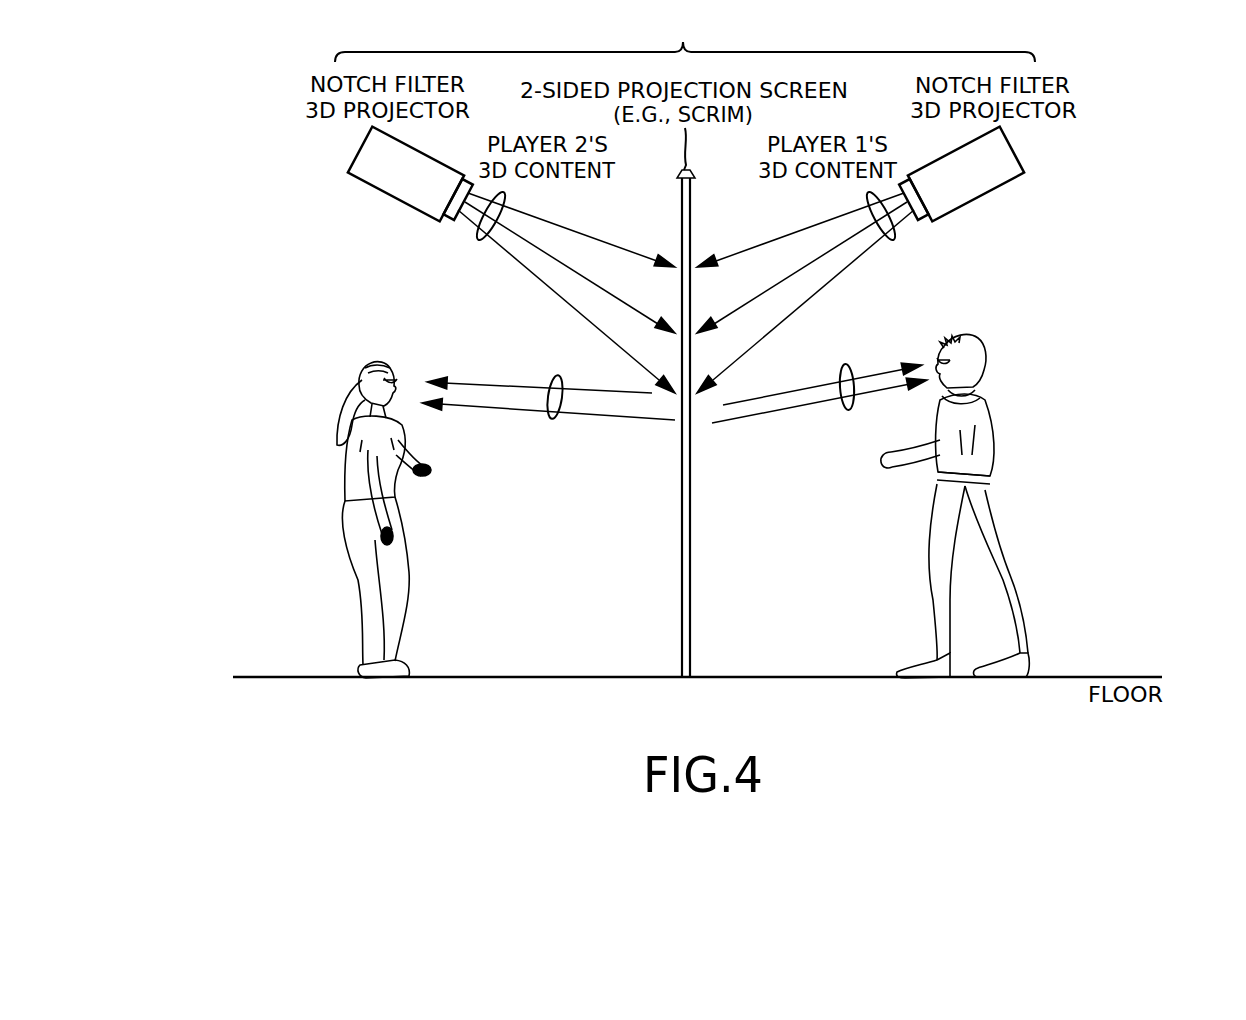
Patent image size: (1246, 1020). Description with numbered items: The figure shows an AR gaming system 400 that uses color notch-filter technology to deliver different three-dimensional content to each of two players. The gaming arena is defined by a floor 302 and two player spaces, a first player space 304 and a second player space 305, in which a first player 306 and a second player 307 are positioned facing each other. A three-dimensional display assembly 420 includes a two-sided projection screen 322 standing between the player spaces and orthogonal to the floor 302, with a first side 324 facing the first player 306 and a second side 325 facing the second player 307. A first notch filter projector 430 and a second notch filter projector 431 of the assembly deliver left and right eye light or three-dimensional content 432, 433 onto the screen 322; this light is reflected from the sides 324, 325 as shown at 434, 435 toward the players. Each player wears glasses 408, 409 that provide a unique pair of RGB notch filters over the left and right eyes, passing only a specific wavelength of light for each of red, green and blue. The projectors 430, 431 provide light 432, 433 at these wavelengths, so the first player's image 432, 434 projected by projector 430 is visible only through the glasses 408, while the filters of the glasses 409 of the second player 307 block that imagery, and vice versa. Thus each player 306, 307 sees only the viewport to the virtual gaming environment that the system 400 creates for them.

The AR gaming system 400 is at (227, 140).
The 3D display assembly 420 is at (685, 38).
The second notch filter 3D projector 431 is at (357, 151).
The first notch filter 3D projector 430 is at (1017, 152).
The left and right eye light or 3D content 433 is at (480, 242).
The left and right eye light or 3D content 432 is at (897, 243).
The 2-sided projection screen 322 is at (691, 172).
The second side 325 is at (680, 222).
The first side 324 is at (692, 222).
The second player space 305 is at (282, 287).
The first player space 304 is at (1150, 272).
The 3D glasses 409 is at (394, 380).
The 3D glasses 408 is at (940, 352).
The second player 307 is at (350, 460).
The first player 306 is at (993, 420).
The reflected 3D content 435 is at (548, 418).
The reflected 3D content 434 is at (845, 411).
The floor 302 is at (1063, 680).